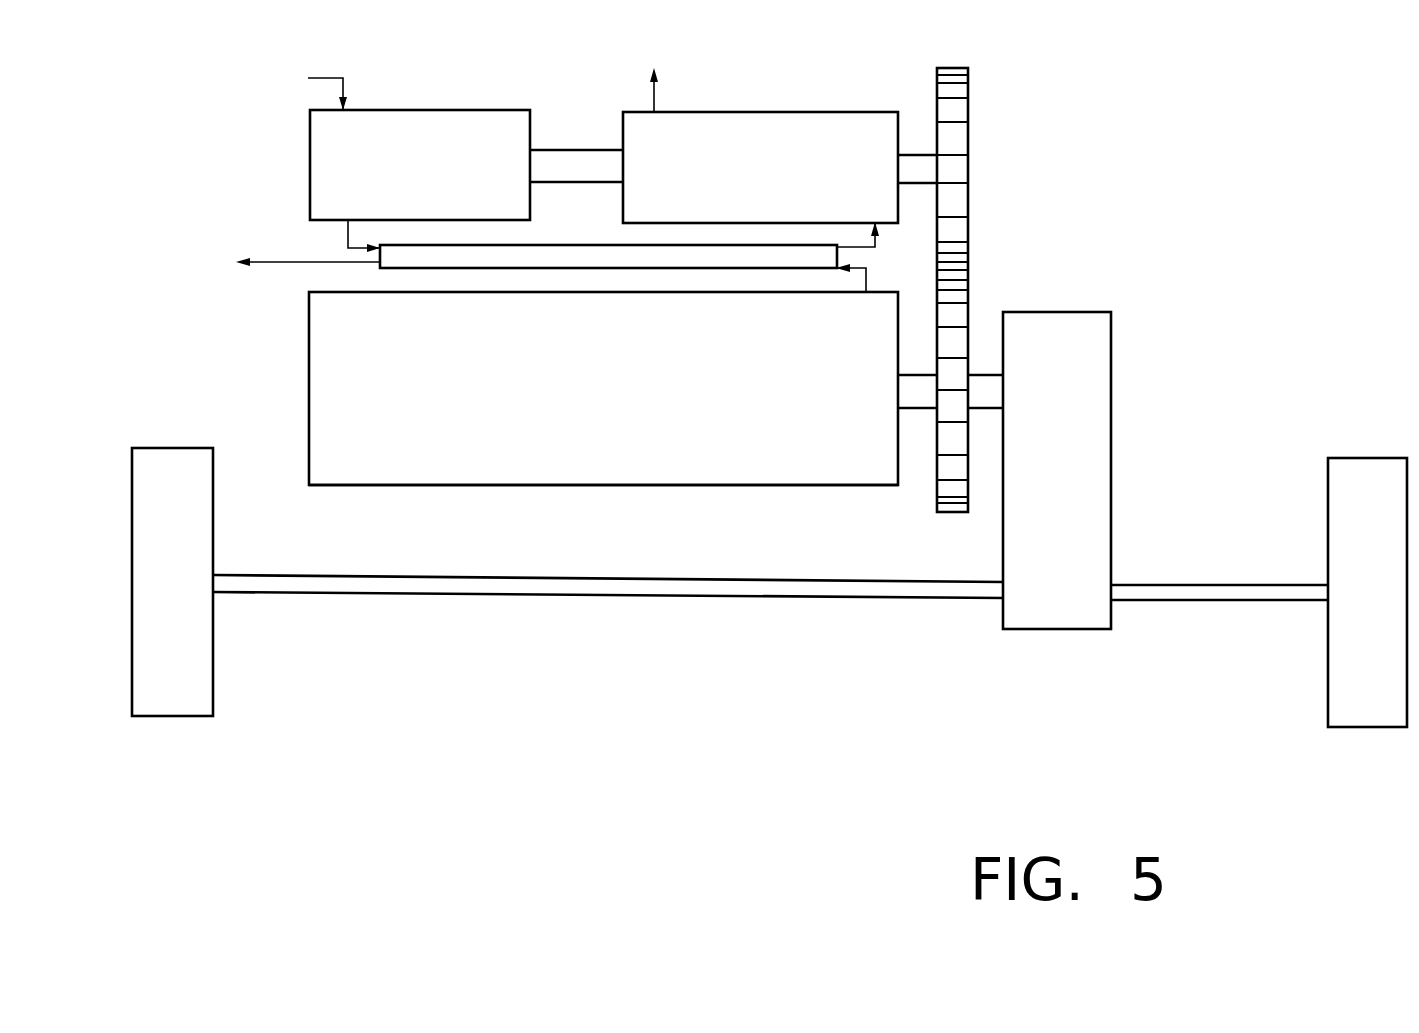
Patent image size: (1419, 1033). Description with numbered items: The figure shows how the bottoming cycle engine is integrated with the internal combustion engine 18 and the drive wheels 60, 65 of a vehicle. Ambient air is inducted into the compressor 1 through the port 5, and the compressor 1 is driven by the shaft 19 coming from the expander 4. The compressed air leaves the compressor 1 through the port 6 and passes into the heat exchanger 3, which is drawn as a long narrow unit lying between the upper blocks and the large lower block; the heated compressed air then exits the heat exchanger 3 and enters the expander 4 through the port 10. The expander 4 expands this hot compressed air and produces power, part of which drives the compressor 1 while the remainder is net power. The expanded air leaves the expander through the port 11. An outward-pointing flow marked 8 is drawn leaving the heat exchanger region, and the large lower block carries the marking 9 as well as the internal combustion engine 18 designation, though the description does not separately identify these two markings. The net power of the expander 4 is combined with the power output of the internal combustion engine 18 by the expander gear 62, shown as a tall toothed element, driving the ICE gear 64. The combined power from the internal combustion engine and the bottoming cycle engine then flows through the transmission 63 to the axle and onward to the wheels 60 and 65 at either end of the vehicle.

The compressor 1 is at (420, 128).
The heat exchanger 3 is at (543, 260).
The expander 4 is at (752, 128).
The port 5 is at (332, 78).
The port 6 is at (347, 240).
The outlet 8 is at (285, 265).
The compressor unit 9 is at (603, 388).
The port 10 is at (880, 222).
The port 11 is at (663, 83).
The internal combustion engine 18 is at (587, 467).
The shaft 19 is at (548, 163).
The drive wheel 60 is at (1337, 535).
The expander gear 62 is at (970, 172).
The transmission 63 is at (1093, 420).
The ICE gear 64 is at (968, 307).
The drive wheel 65 is at (200, 665).